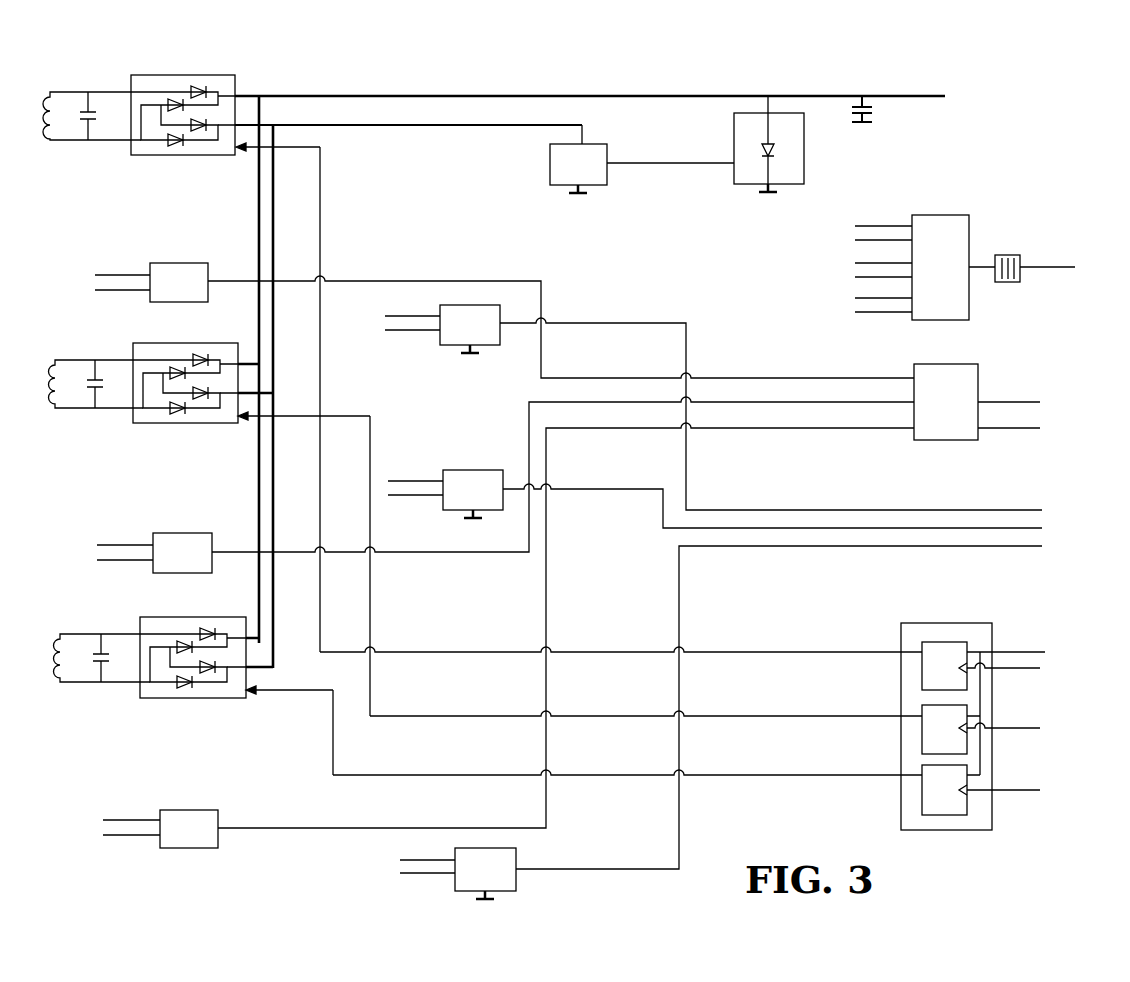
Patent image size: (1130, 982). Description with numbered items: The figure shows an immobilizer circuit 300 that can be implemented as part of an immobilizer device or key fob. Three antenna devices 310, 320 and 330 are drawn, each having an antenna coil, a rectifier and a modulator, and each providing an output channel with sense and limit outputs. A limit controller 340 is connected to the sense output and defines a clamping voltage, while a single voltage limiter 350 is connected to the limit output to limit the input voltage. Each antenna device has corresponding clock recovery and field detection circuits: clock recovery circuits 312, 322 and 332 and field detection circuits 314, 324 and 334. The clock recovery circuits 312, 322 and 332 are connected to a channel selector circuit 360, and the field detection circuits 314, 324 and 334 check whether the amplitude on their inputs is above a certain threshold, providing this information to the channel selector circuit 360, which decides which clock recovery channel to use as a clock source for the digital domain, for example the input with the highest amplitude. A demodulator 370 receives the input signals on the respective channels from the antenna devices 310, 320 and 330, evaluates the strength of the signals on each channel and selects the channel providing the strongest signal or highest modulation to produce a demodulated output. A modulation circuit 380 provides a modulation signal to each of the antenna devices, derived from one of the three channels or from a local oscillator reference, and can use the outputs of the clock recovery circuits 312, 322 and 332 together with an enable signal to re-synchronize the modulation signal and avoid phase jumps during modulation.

The immobilizer circuit 300 is at (1018, 74).
The antenna device 310 is at (152, 75).
The clock recovery circuit 312 is at (189, 263).
The field detection circuit 314 is at (492, 348).
The antenna device 320 is at (150, 343).
The clock recovery circuit 322 is at (190, 533).
The field detection circuit 324 is at (485, 470).
The antenna device 330 is at (150, 617).
The clock recovery circuit 332 is at (196, 810).
The field detection circuit 334 is at (492, 848).
The limit controller 340 is at (614, 145).
The voltage limiter 350 is at (808, 182).
The channel selector circuit 360 is at (968, 363).
The demodulator 370 is at (972, 216).
The modulation circuit 380 is at (974, 623).